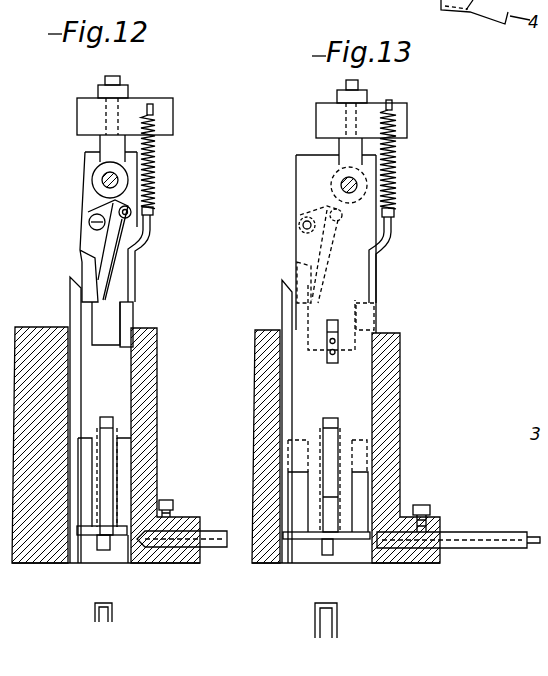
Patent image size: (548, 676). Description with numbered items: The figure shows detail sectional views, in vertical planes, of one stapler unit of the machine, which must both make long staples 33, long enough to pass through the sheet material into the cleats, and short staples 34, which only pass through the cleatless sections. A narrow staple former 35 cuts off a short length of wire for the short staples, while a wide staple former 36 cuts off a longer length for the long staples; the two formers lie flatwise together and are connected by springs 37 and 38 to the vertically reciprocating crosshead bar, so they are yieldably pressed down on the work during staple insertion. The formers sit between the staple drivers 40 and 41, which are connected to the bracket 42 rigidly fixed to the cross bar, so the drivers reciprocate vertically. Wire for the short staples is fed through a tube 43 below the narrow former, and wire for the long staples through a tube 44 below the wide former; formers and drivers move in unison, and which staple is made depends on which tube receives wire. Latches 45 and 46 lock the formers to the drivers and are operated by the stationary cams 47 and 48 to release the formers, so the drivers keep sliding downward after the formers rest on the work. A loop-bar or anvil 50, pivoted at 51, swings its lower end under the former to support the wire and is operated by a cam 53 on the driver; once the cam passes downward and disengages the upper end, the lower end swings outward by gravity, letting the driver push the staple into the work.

In FIG. 13, the long staple 33 is at (315, 622).
In FIG. 12, the short staple 34 is at (95, 613).
In FIG. 12, the narrow staple former 35 is at (120, 400).
In FIG. 13, the wide staple former 36 is at (356, 330).
In FIG. 12, the spring 37 is at (156, 195).
In FIG. 13, the spring 38 is at (378, 191).
In FIG. 13, the staple driver 40 is at (350, 246).
In FIG. 12, the staple driver 41 is at (110, 282).
In FIG. 12, the bracket 42 is at (165, 117).
In FIG. 13, the bracket 42 is at (390, 124).
In FIG. 12, the tube 43 is at (211, 530).
In FIG. 13, the tube 44 is at (486, 537).
In FIG. 12, the latch 45 is at (85, 245).
In FIG. 13, the latch 46 is at (296, 266).
In FIG. 12, the stationary cam 47 is at (78, 282).
In FIG. 13, the stationary cam 48 is at (290, 289).
In FIG. 12, the loop-bar 50 is at (107, 545).
In FIG. 13, the loop-bar 50 is at (331, 550).
In FIG. 13, the pivot 51 is at (547, 400).
In FIG. 13, the cam 53 is at (340, 358).